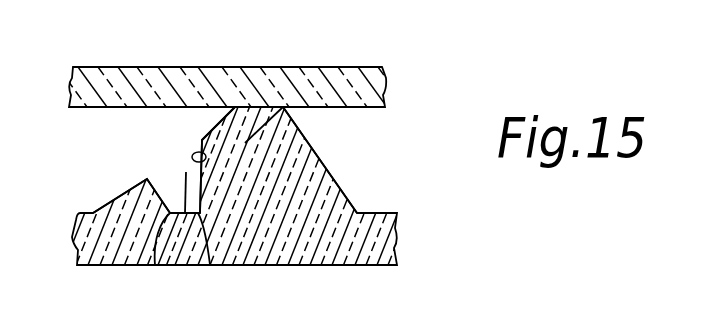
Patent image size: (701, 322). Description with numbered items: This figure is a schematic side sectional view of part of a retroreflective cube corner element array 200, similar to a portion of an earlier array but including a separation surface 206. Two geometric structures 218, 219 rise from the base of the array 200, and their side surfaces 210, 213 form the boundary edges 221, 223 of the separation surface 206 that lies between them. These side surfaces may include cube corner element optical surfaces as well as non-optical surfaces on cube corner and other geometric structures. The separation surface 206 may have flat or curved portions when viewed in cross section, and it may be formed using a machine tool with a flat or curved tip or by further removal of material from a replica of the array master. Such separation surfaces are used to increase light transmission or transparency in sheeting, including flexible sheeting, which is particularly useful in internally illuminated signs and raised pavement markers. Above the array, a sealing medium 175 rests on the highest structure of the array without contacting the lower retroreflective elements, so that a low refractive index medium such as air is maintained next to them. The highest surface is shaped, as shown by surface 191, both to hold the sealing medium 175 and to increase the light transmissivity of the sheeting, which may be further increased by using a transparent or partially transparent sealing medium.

The sealing medium 175 is at (178, 78).
The surface 191 is at (263, 107).
The array 200 is at (75, 250).
The separation surface 206 is at (186, 172).
The side surface 210 is at (168, 198).
The side surface 213 is at (197, 153).
The geometric structure 218 is at (128, 193).
The geometric structure 219 is at (300, 182).
The boundary edge 221 is at (155, 265).
The boundary edge 223 is at (210, 265).